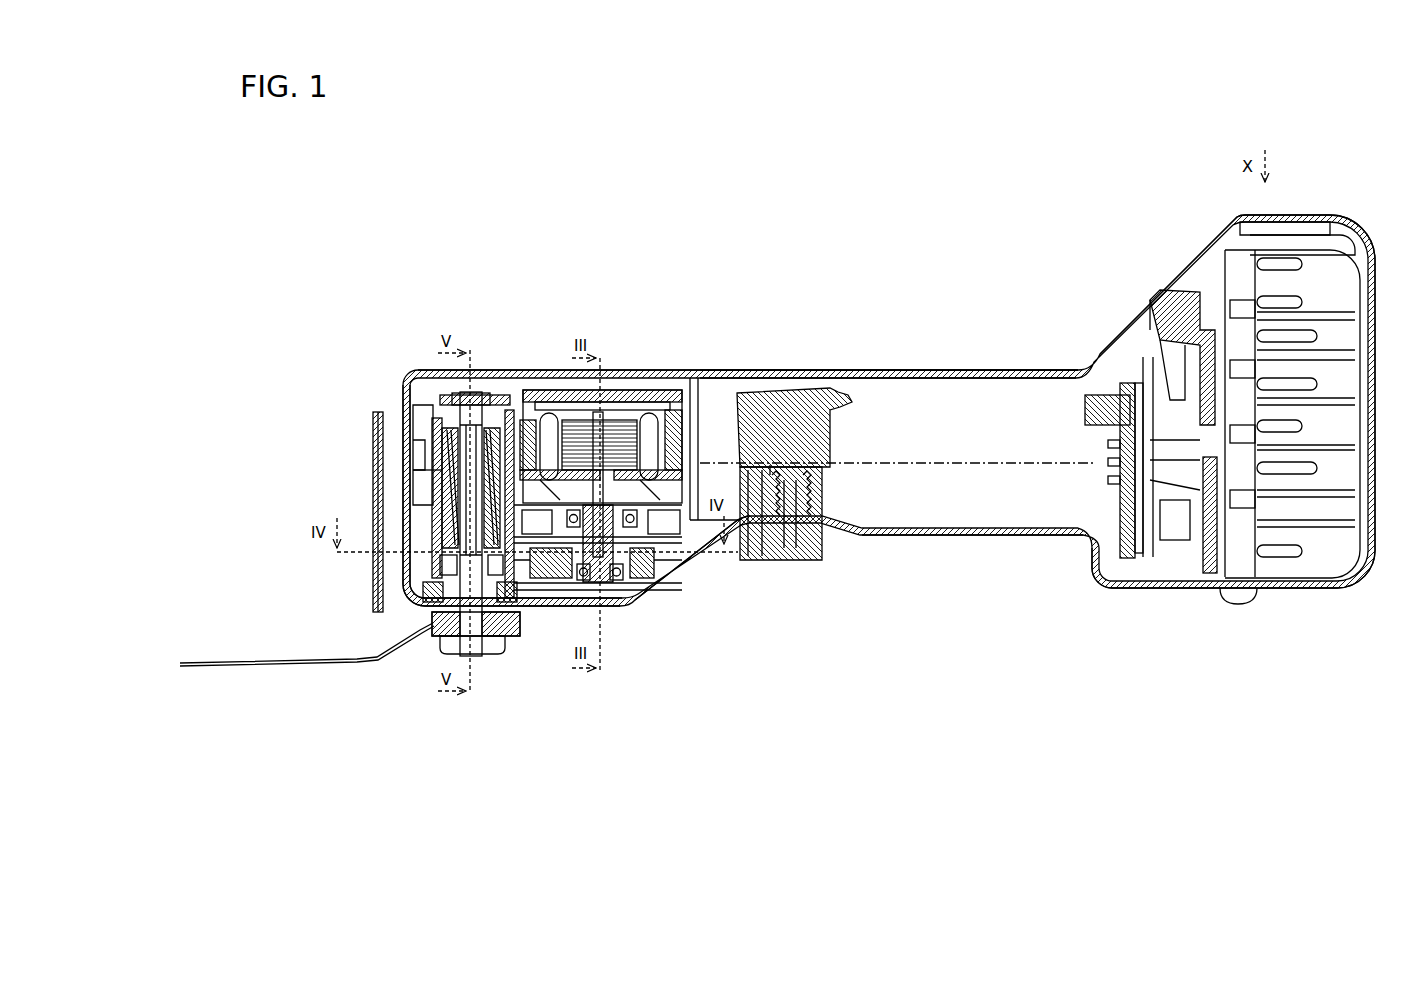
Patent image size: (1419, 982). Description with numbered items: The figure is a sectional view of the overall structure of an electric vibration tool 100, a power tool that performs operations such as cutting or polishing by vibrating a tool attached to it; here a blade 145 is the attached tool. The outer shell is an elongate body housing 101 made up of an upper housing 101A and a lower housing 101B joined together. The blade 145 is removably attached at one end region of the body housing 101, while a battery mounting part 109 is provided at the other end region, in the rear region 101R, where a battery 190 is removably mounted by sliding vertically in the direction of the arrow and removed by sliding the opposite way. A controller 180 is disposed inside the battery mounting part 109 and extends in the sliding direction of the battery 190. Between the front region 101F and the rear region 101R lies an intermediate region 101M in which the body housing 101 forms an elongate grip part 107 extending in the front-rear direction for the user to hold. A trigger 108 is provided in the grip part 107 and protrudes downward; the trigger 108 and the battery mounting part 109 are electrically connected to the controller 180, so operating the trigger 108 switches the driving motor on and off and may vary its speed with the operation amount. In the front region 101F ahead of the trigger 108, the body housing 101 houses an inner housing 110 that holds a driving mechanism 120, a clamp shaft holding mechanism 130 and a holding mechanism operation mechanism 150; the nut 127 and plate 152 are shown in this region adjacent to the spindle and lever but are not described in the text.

The electric vibration tool 100 is at (882, 278).
The body housing 101 is at (732, 366).
The upper housing 101A is at (660, 370).
The lower housing 101B is at (703, 558).
The front region 101F is at (527, 348).
The intermediate region 101M is at (918, 332).
The rear region 101R is at (1104, 281).
The grip part 107 is at (963, 359).
The trigger 108 is at (794, 556).
The battery mounting part 109 is at (1139, 281).
The inner housing 110 is at (568, 390).
The driving mechanism 120 is at (672, 590).
The clamp nut 127 is at (508, 623).
The clamp shaft holding mechanism 130 is at (428, 431).
The blade 145 is at (306, 656).
The holding mechanism operation mechanism 150 is at (358, 447).
The lever plate 152 is at (415, 473).
The controller 180 is at (1112, 503).
The battery 190 is at (1316, 211).